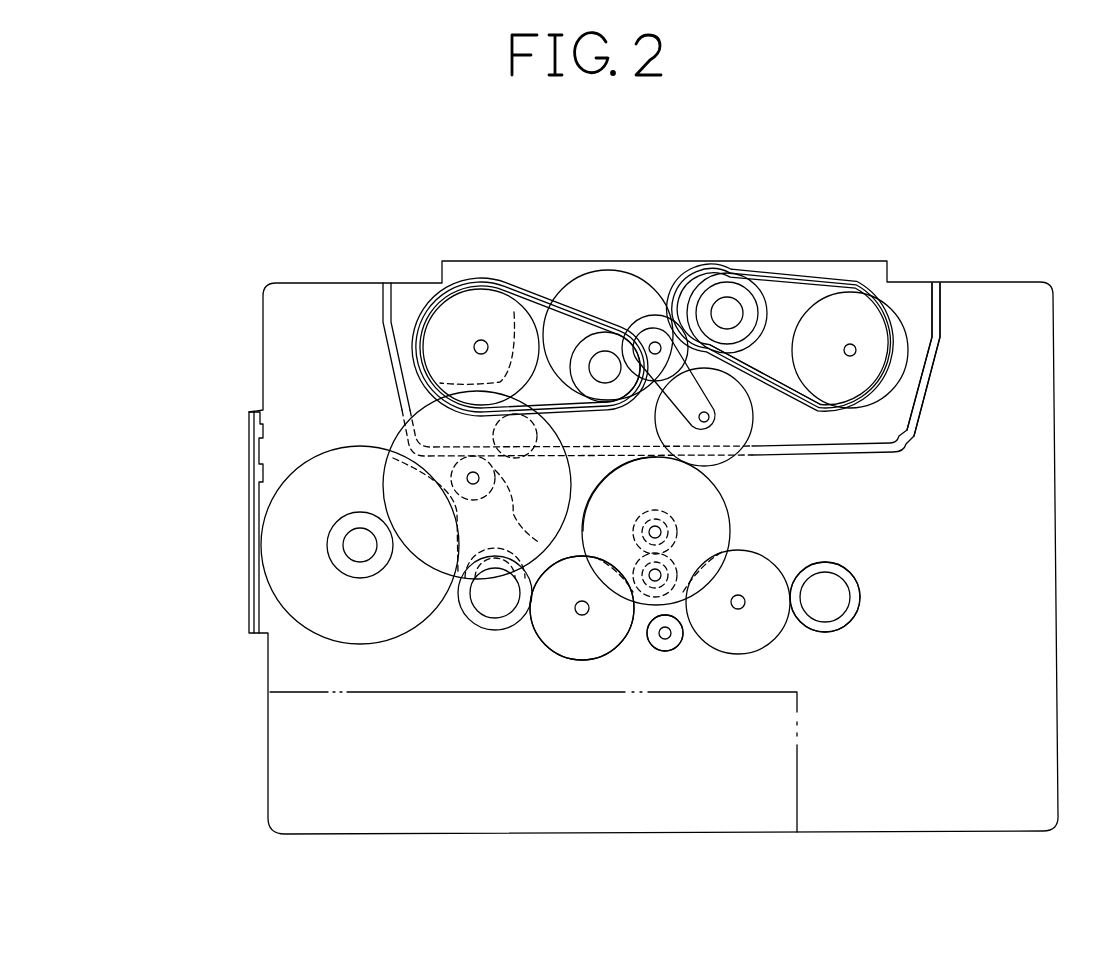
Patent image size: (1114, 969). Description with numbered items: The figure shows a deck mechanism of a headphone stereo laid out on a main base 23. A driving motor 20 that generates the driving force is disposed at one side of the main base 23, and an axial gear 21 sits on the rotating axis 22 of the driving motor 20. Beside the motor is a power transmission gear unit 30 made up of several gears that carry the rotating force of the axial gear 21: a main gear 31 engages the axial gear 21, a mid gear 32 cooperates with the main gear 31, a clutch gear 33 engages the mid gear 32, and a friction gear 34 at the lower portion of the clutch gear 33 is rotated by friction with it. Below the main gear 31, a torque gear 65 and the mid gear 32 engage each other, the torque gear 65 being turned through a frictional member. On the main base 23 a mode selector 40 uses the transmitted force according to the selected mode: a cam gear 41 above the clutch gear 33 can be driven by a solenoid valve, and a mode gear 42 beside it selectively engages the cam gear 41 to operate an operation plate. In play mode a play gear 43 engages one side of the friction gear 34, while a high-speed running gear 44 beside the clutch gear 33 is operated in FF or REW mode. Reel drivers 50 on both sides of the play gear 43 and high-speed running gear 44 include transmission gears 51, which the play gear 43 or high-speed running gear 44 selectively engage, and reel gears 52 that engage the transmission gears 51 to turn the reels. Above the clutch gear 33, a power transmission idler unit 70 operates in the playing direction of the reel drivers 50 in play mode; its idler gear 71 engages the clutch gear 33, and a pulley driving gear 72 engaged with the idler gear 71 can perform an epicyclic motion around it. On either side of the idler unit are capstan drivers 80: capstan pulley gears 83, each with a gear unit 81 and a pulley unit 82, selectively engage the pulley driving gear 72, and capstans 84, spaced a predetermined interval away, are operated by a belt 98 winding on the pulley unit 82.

The driving motor 20 is at (283, 580).
The axial gear 21 is at (343, 523).
The rotating axis 22 is at (341, 547).
The main base 23 is at (275, 770).
The power transmission gear unit 30 is at (458, 516).
The main gear 31 is at (393, 433).
The mid gear 32 is at (623, 475).
The clutch gear 33 is at (730, 527).
The friction gear 34 is at (636, 529).
The mode selector 40 is at (538, 288).
The cam gear 41 is at (607, 288).
The mode gear 42 is at (497, 428).
The play gear 43 is at (686, 646).
The high-speed running gear 44 is at (663, 651).
The reel drivers 50 is at (532, 648).
The transmission gears 51 is at (586, 660).
The reel gears 52 is at (485, 630).
The torque gear 65 is at (474, 503).
The power transmission idler unit 70 is at (766, 440).
The idler gear 71 is at (910, 430).
The pulley driving gear 72 is at (658, 316).
The capstan drivers 80 is at (500, 272).
The gear unit 81 is at (726, 297).
The pulley unit 82 is at (750, 288).
The capstan pulley gears 83 is at (770, 298).
The capstans 84 is at (862, 305).
The belt 98 is at (423, 308).